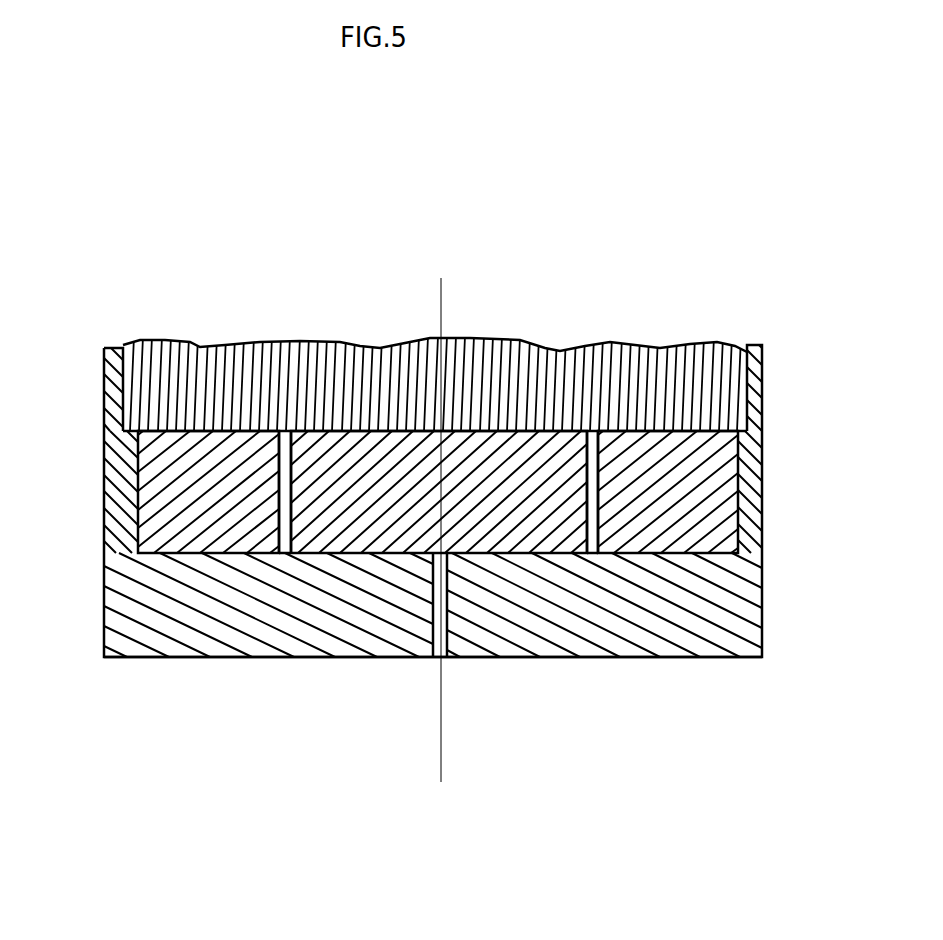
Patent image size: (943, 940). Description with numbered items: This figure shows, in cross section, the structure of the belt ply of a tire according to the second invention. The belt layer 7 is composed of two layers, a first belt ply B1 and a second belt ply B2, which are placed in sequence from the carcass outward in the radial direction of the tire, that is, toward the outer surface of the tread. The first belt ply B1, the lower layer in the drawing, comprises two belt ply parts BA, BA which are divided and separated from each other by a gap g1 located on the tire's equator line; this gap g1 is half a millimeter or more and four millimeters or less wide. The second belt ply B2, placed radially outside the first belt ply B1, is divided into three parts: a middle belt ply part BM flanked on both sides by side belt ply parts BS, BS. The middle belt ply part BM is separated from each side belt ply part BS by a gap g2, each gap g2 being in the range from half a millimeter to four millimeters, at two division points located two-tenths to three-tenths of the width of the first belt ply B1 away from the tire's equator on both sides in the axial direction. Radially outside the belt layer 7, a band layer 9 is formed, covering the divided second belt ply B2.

The belt layer 7 is at (773, 537).
The band layer 9 is at (483, 380).
The second belt ply B2 is at (438, 429).
The side belt ply part BS is at (235, 500).
The middle belt ply part BM is at (370, 447).
The gap g2 is at (285, 518).
The first belt ply B1 is at (433, 746).
The belt ply part BA is at (363, 657).
The gap g1 is at (438, 628).